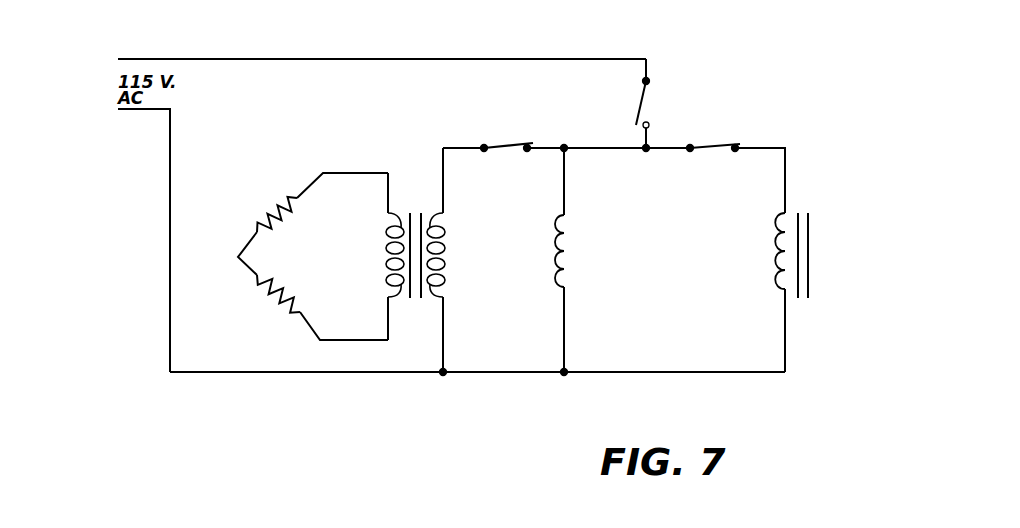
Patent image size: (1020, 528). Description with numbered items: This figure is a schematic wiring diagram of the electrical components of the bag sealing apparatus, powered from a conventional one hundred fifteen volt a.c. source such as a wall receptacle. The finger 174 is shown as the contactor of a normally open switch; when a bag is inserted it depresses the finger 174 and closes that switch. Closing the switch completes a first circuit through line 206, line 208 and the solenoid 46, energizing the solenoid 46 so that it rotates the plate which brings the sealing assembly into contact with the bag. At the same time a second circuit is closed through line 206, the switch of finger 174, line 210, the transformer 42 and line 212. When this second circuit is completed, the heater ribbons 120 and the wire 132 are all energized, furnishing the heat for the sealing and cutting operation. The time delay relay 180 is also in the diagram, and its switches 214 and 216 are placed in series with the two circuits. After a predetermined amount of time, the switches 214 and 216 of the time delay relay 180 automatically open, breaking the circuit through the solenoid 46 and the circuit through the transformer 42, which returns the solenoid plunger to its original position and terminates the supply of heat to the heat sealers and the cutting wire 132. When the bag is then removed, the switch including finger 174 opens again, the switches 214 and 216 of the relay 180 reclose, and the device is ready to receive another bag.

The line 206 is at (420, 59).
The line 212 is at (322, 372).
The finger 174 is at (645, 100).
The switch 214 is at (503, 151).
The switch 216 is at (712, 151).
The line 210 is at (610, 126).
The line 208 is at (675, 146).
The transformer 42 is at (451, 245).
The solenoid 46 is at (808, 252).
The time delay relay 180 is at (688, 263).
The heater ribbons 120 is at (271, 212).
The wire 132 is at (253, 277).